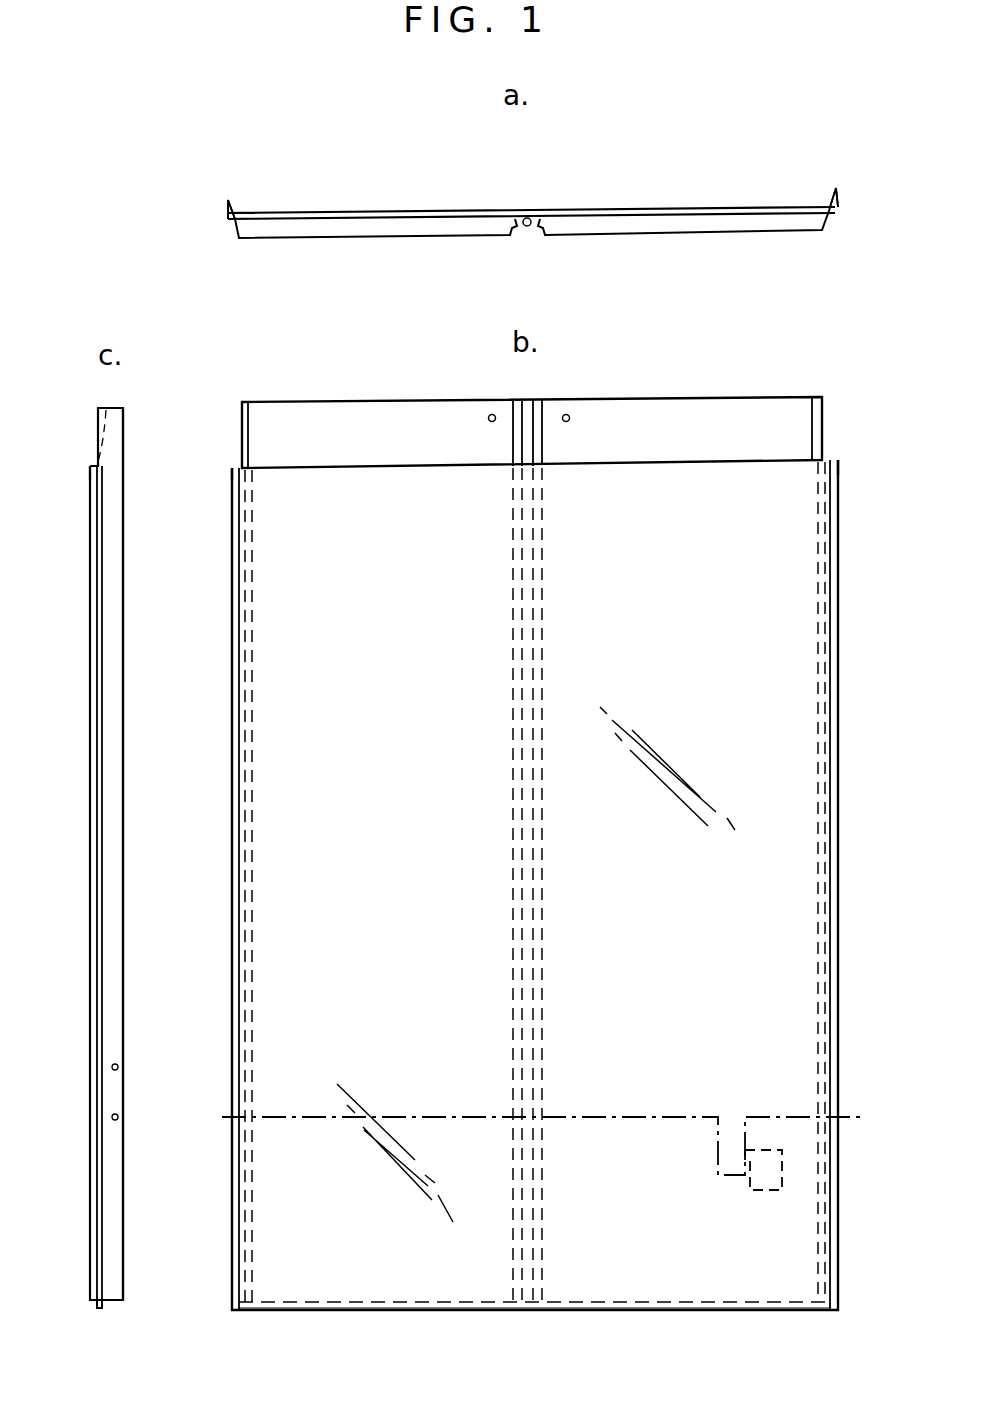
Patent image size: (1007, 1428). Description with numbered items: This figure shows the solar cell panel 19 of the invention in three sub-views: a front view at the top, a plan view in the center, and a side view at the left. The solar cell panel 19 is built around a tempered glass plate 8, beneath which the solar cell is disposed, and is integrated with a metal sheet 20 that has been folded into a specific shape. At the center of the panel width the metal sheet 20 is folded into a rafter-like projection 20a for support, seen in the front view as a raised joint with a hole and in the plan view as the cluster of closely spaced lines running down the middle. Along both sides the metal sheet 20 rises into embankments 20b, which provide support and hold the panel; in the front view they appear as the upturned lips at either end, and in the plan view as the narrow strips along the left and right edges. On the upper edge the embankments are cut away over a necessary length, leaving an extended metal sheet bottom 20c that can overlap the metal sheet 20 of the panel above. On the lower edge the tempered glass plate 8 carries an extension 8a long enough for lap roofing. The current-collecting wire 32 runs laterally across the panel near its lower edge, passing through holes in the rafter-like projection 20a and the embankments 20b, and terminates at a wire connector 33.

The tempered glass plate 8 is at (410, 213).
The extension of the tempered glass plate 8a is at (444, 1312).
The solar cell panel 19 is at (852, 218).
The metal sheet 20 is at (620, 237).
The rafter-like projection 20a is at (527, 232).
The embankments 20b is at (232, 205).
The extended metal sheet bottom 20c is at (412, 432).
The current-collecting wire 32 is at (588, 1118).
The wire connector 33 is at (765, 1190).